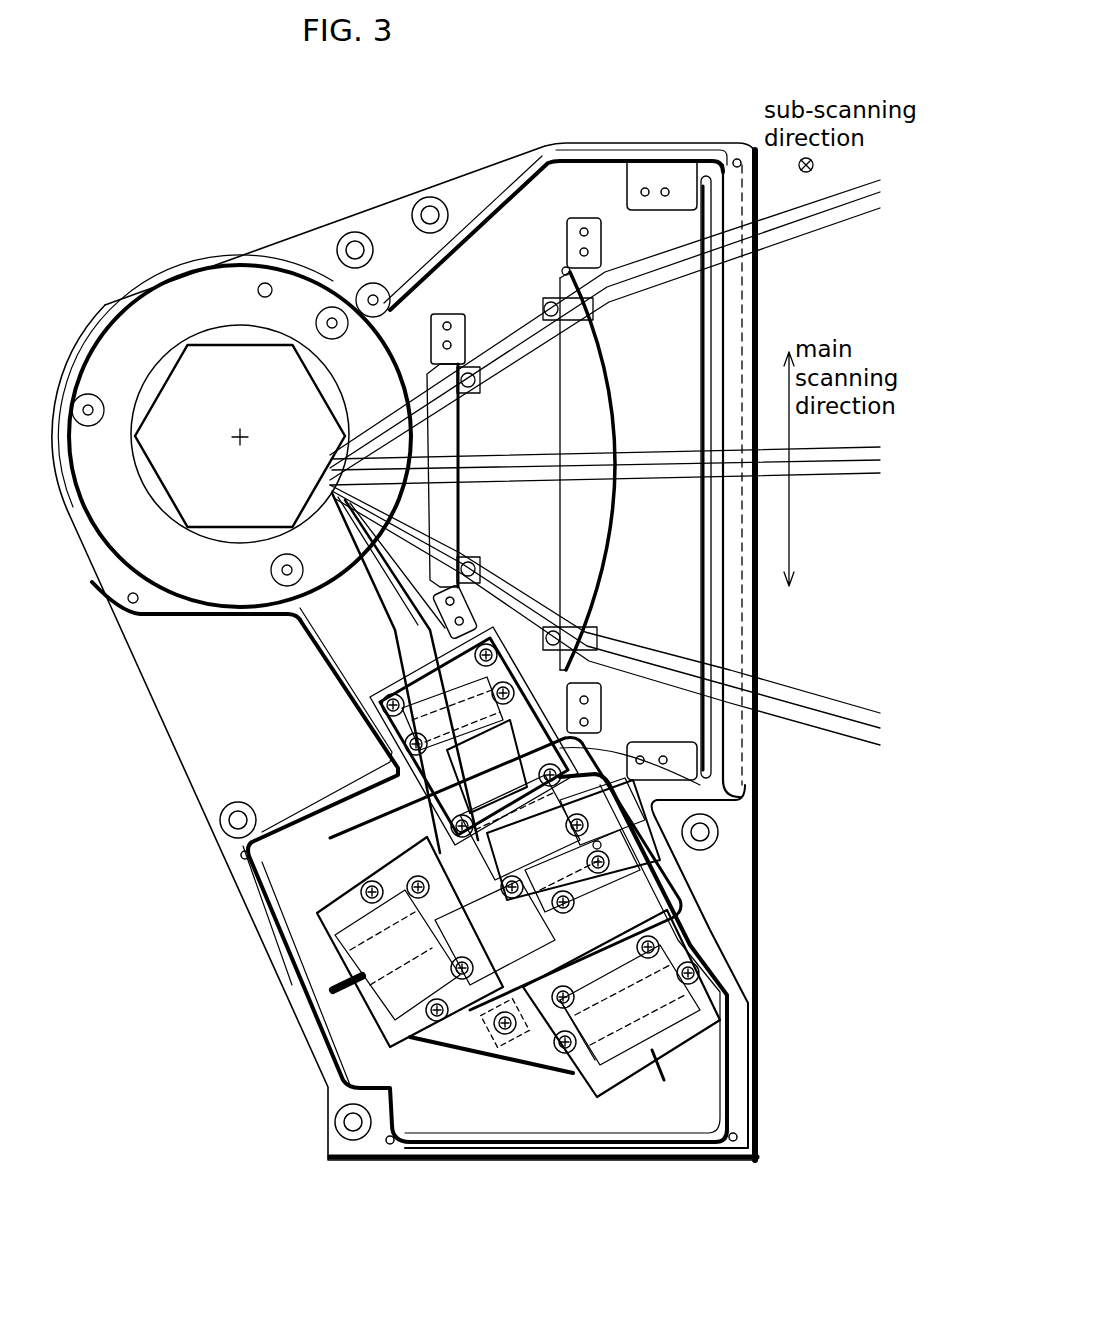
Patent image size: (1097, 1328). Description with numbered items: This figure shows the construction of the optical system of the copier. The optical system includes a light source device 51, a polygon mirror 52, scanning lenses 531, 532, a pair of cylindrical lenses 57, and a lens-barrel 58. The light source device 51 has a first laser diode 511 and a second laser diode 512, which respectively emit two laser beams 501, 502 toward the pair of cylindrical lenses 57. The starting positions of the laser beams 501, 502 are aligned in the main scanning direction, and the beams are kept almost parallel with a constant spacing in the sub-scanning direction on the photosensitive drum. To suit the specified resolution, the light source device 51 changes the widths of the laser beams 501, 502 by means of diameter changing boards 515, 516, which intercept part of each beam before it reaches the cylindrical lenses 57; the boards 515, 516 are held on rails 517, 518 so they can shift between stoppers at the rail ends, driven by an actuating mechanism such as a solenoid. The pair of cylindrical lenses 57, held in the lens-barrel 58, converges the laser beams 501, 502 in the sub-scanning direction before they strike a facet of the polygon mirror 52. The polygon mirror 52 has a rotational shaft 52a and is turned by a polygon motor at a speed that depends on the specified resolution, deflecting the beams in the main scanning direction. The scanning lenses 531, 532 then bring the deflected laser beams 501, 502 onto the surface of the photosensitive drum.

The light source device 51 is at (327, 950).
The first laser diode 511 is at (358, 985).
The second laser diode 512 is at (672, 1053).
The diameter changing board 515 is at (480, 860).
The diameter changing board 516 is at (627, 898).
The rail 517 is at (497, 1035).
The rail 518 is at (585, 1025).
The laser beam 501 is at (484, 1000).
The laser beam 502 is at (640, 915).
The polygon mirror 52 is at (240, 517).
The rotational shaft 52a is at (240, 437).
The scanning lens 531 is at (448, 440).
The scanning lens 532 is at (559, 370).
The pair of cylindrical lenses 57 is at (455, 868).
The lens-barrel 58 is at (560, 748).